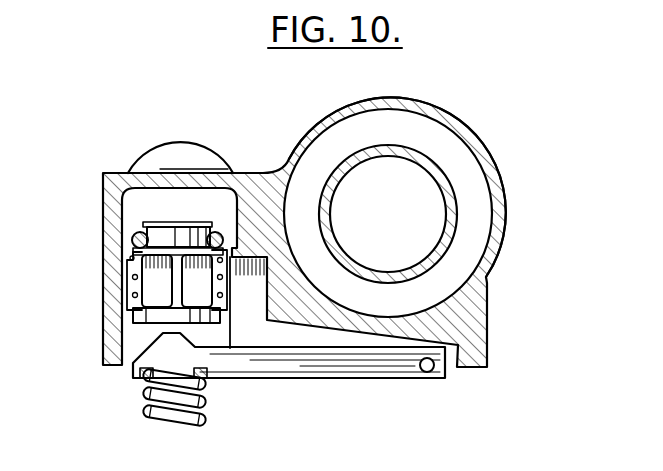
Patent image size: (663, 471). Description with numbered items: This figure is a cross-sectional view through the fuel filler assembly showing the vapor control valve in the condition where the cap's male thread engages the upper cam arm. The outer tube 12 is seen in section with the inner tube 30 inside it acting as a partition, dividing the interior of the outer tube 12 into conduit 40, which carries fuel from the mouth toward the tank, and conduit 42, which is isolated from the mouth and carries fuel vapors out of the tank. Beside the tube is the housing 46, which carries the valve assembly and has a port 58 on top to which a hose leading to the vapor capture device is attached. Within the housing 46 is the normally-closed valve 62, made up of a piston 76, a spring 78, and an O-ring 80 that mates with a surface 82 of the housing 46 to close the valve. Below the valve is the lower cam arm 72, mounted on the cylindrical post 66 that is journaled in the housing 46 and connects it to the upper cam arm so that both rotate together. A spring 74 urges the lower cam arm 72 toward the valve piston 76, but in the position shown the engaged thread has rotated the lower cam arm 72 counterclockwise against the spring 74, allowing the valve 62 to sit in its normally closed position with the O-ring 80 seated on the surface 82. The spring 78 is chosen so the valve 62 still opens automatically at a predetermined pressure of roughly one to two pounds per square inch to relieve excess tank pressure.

The outer tube 12 is at (458, 113).
The inner tube 30 is at (443, 177).
The conduit 40 is at (407, 196).
The conduit 42 is at (473, 220).
The housing 46 is at (475, 322).
The port 58 is at (170, 153).
The normally-closed valve 62 is at (190, 206).
The cylindrical post 66 is at (431, 372).
The lower cam arm 72 is at (368, 360).
The spring 74 is at (140, 397).
The piston 76 is at (133, 323).
The spring 78 is at (133, 272).
The O-ring 80 is at (138, 228).
The surface 82 is at (231, 229).